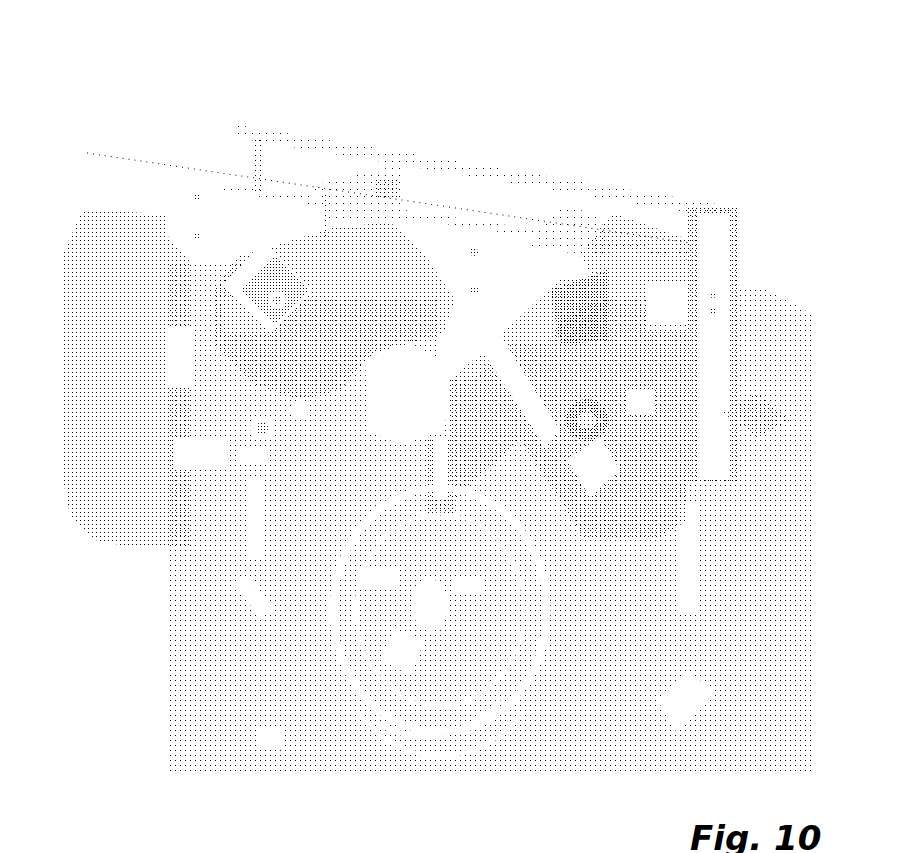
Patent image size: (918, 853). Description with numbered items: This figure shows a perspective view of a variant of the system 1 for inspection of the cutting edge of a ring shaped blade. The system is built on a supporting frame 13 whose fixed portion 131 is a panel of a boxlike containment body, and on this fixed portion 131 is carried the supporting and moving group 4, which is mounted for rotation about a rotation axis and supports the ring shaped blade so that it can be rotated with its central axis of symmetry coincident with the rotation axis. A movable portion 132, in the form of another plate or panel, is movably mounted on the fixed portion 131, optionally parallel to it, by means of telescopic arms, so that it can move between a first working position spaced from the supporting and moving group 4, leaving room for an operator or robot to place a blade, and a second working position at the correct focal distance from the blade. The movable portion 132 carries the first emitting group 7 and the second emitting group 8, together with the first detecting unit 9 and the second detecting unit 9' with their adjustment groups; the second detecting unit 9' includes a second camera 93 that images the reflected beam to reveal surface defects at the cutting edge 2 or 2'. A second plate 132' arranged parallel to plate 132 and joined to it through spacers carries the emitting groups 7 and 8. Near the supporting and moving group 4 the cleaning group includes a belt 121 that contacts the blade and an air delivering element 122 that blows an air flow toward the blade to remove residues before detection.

The system for inspection of a cutting edge of a blade 1 is at (68, 115).
The cutting edge 2 is at (440, 600).
The cutting edge 2' is at (466, 753).
The supporting and moving group 4 is at (403, 657).
The first emitting group 7 is at (560, 290).
The second emitting group 8 is at (232, 250).
The first detecting unit 9 is at (548, 340).
The second detecting unit 9' is at (300, 375).
The supporting frame 13 is at (790, 250).
The second camera 93 is at (258, 443).
The belt 121 is at (437, 745).
The air delivering element 122 is at (260, 600).
The fixed portion 131 is at (787, 325).
The movable portion 132 is at (730, 326).
The second plate 132' is at (476, 319).